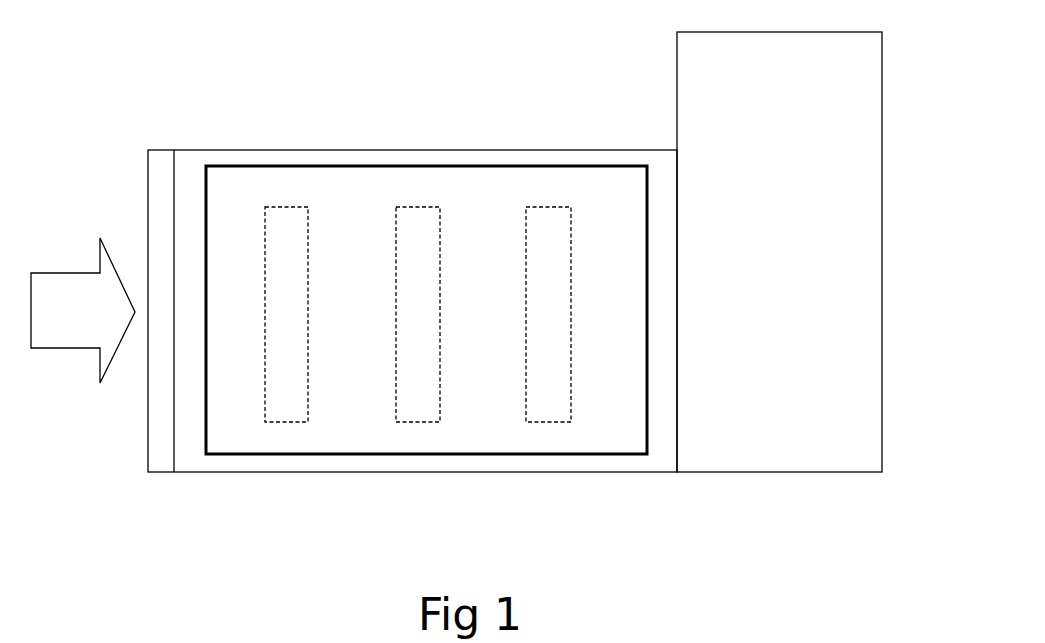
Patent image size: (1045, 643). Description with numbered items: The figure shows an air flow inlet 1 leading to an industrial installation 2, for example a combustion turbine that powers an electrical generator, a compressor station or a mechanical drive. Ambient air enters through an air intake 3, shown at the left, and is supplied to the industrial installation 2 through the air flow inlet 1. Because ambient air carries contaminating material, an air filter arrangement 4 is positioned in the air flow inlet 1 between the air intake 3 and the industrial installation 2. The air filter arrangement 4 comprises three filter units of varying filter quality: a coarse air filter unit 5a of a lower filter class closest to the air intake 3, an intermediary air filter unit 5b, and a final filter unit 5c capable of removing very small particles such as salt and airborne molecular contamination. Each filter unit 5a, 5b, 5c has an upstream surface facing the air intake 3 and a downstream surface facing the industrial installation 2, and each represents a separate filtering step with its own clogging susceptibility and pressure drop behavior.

The air flow inlet 1 is at (189, 165).
The industrial installation 2 is at (865, 72).
The air intake 3 is at (161, 412).
The air filter arrangement 4 is at (471, 167).
The coarse air filter unit 5a is at (284, 410).
The intermediary air filter unit 5b is at (425, 412).
The final filter unit 5c is at (548, 413).